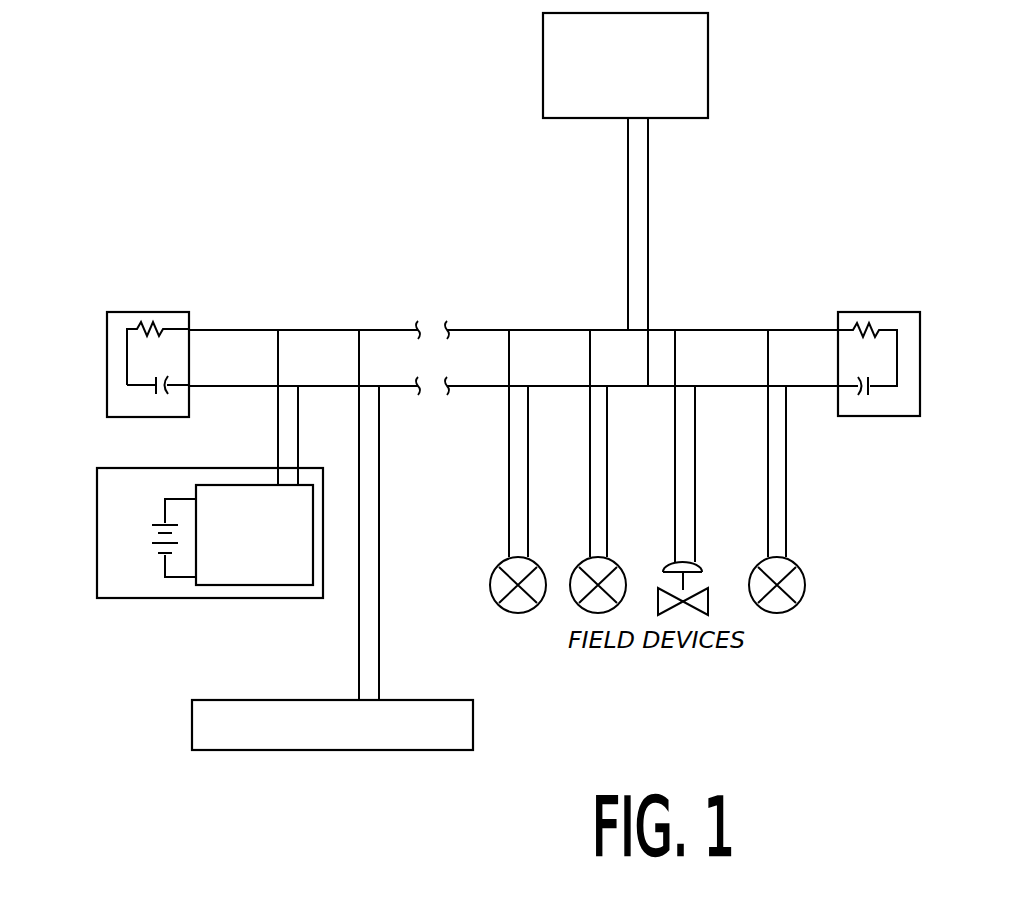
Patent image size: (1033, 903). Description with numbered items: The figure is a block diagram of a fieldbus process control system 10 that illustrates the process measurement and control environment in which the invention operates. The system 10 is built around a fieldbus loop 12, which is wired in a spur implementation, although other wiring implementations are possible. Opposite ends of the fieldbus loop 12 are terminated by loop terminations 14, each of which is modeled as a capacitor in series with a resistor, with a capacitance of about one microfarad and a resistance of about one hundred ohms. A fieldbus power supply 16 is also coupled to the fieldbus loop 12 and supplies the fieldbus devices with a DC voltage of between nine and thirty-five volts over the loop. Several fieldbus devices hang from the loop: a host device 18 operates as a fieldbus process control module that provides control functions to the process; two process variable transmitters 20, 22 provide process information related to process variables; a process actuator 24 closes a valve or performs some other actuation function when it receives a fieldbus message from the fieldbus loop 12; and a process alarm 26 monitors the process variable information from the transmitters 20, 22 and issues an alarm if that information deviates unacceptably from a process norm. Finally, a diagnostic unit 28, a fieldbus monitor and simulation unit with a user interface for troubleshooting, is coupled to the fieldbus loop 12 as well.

The fieldbus process control system 10 is at (388, 130).
The fieldbus loop 12 is at (474, 331).
The loop terminations 14 is at (137, 312).
The fieldbus power supply 16 is at (97, 513).
The host device 18 is at (473, 708).
The process variable transmitter 20 is at (494, 572).
The process variable transmitter 22 is at (615, 563).
The process actuator 24 is at (695, 565).
The process alarm 26 is at (805, 572).
The diagnostic unit 28 is at (708, 43).